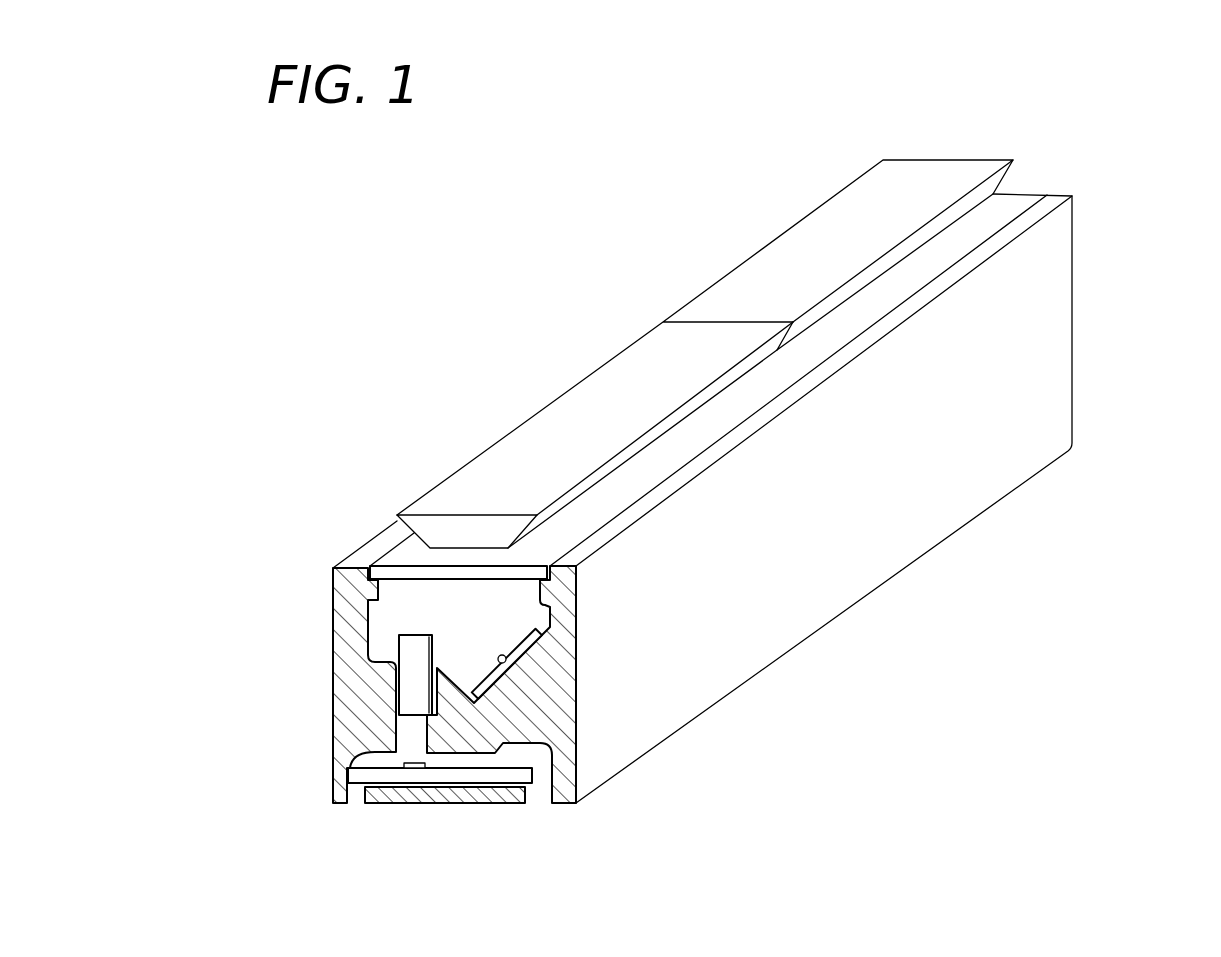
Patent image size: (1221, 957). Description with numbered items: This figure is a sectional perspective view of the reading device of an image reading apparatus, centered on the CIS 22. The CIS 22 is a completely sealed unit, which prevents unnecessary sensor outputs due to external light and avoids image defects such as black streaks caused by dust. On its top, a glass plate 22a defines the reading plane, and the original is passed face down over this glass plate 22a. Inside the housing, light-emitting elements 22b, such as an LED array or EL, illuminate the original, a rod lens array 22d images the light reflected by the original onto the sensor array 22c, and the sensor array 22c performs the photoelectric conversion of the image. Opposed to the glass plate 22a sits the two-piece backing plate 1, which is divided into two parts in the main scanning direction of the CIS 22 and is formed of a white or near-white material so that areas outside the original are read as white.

The two-piece backing plate 1 is at (530, 410).
The CIS 22 is at (1090, 335).
The glass plate 22a is at (515, 552).
The light-emitting elements 22b is at (514, 660).
The sensor array 22c is at (420, 772).
The rod lens array 22d is at (445, 700).